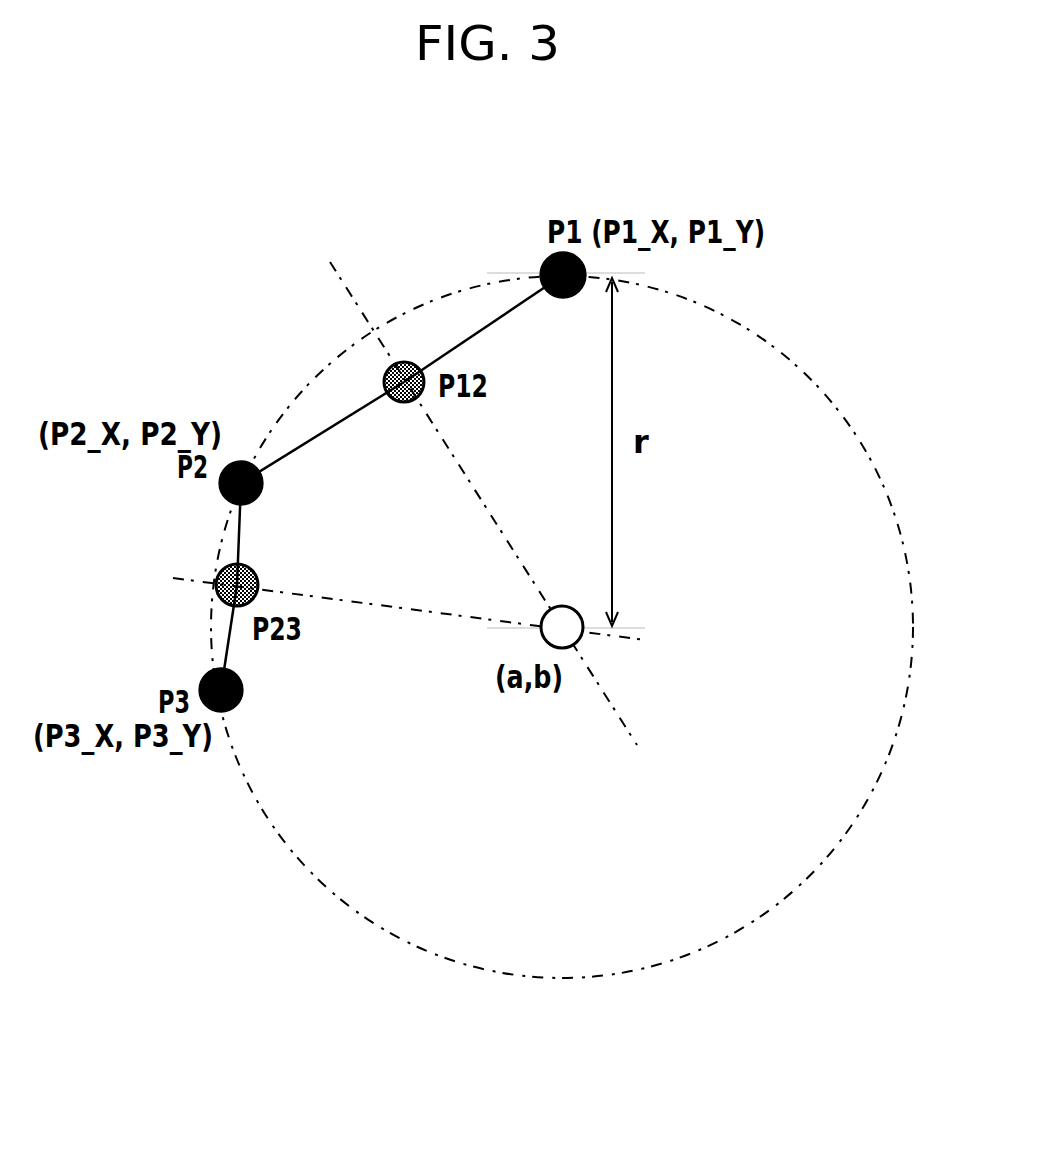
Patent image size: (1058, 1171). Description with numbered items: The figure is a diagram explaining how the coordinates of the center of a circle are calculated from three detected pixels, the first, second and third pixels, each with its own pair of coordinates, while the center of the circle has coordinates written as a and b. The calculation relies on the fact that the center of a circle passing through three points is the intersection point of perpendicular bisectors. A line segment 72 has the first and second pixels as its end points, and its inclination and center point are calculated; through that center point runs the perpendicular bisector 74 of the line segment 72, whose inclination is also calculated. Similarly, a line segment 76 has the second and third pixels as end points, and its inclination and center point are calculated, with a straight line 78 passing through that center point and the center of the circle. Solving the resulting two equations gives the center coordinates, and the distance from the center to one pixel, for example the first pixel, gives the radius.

The line segment 72 is at (337, 420).
The perpendicular bisector 74 is at (343, 281).
The line segment 76 is at (228, 636).
The perpendicular bisector of P2P3 through P23 78 is at (187, 578).